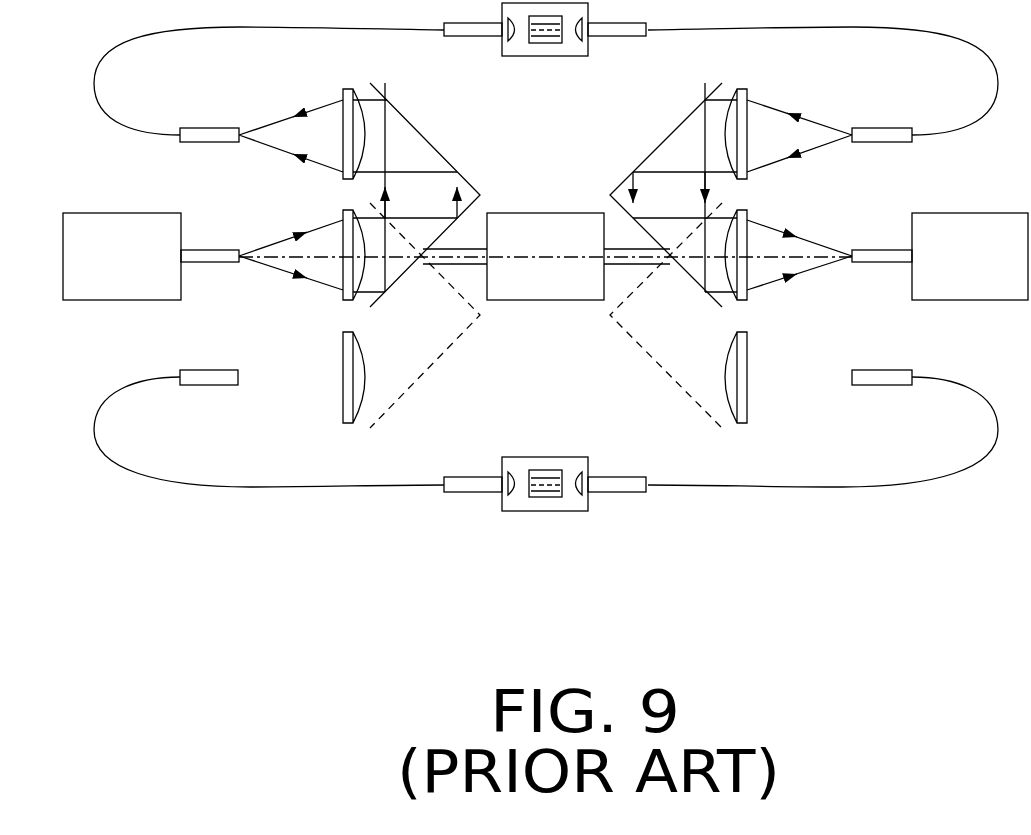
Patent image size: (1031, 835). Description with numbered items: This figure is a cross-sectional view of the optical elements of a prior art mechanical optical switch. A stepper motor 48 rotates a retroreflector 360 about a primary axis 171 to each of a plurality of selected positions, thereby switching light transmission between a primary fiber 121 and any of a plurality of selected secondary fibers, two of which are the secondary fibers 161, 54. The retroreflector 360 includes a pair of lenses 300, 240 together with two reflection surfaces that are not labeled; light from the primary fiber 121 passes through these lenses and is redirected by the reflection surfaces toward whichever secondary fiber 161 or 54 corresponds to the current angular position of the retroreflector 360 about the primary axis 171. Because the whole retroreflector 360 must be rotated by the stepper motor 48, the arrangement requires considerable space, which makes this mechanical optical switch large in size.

The secondary fiber 161 is at (208, 128).
The lens 300 is at (343, 137).
The retroreflector 360 is at (425, 139).
The stepper motor 48 is at (500, 227).
The primary fiber 121 is at (213, 248).
The primary axis 171 is at (380, 252).
The lens 240 is at (345, 285).
The secondary fiber 54 is at (210, 375).